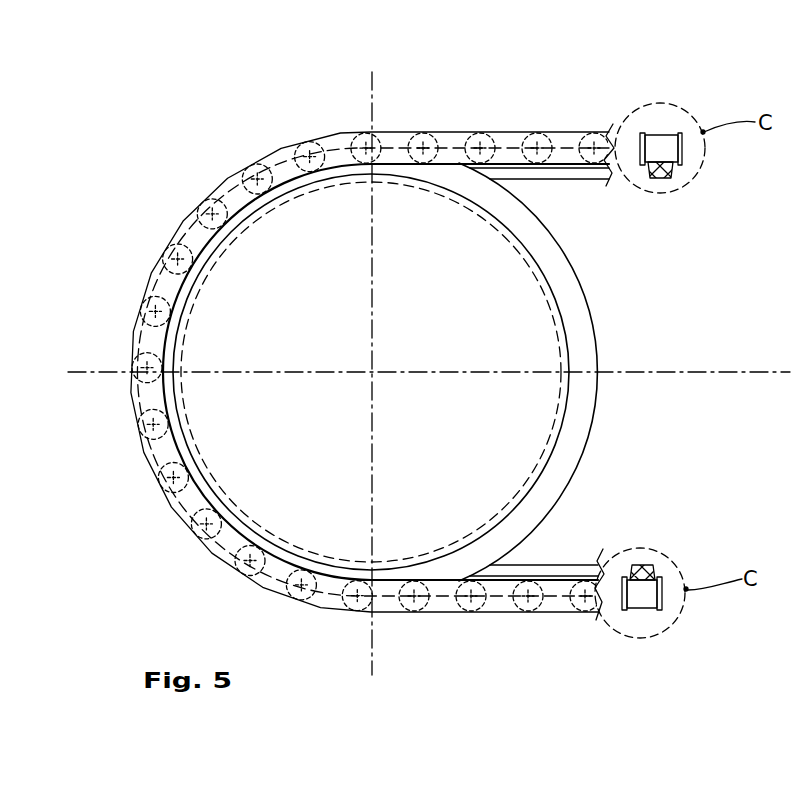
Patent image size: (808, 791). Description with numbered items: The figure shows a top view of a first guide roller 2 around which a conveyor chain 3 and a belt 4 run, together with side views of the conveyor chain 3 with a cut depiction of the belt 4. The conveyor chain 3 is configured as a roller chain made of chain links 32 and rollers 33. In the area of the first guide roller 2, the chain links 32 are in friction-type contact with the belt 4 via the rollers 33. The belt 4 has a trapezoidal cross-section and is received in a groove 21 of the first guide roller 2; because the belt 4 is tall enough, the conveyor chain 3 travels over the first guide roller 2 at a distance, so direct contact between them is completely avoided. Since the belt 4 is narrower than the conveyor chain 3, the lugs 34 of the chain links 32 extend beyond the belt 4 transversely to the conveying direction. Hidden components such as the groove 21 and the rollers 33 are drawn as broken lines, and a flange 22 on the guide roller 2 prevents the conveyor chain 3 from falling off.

The first guide roller 2 is at (491, 334).
The groove 21 is at (561, 418).
The flange 22 is at (574, 309).
The conveyor chain 3 is at (445, 368).
The chain links 32 is at (626, 134).
The rollers 33 is at (254, 176).
The lugs 34 is at (682, 150).
The belt 4 is at (674, 174).